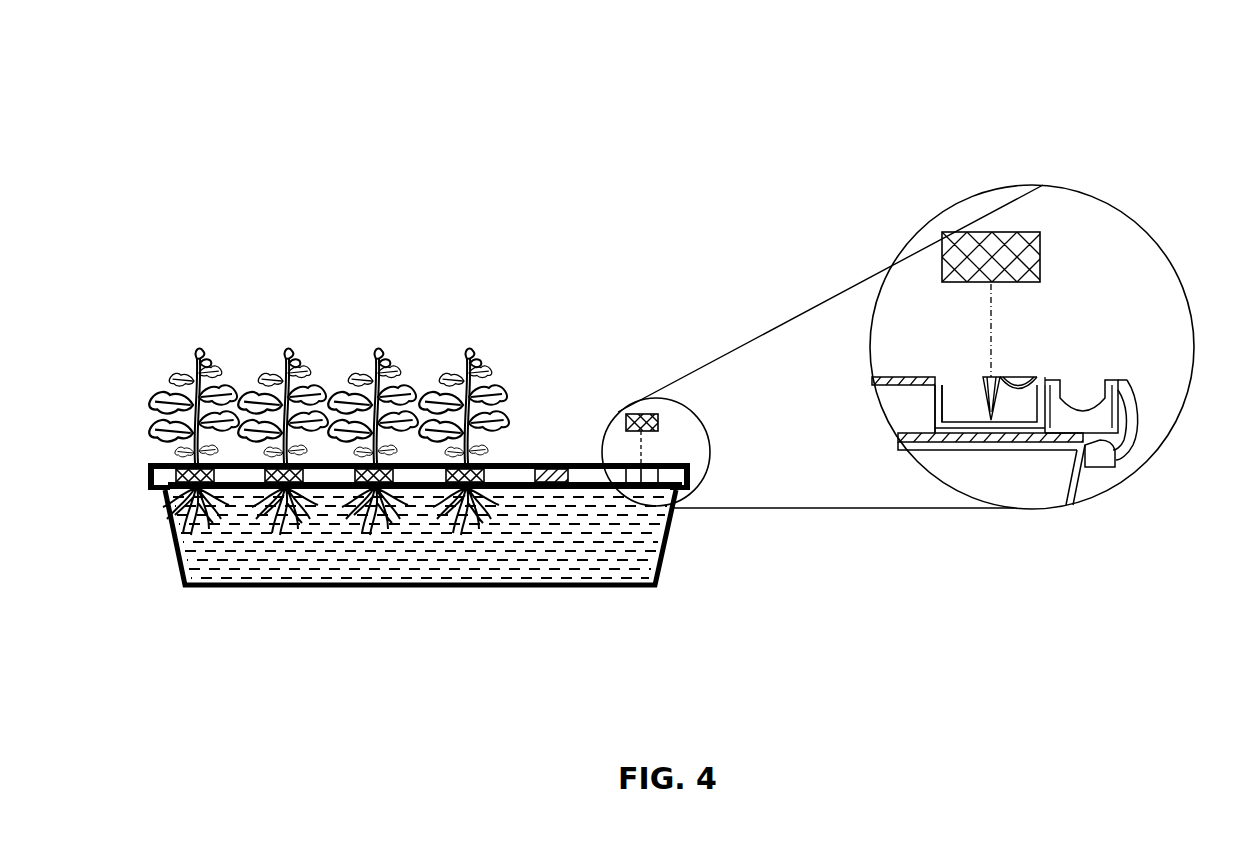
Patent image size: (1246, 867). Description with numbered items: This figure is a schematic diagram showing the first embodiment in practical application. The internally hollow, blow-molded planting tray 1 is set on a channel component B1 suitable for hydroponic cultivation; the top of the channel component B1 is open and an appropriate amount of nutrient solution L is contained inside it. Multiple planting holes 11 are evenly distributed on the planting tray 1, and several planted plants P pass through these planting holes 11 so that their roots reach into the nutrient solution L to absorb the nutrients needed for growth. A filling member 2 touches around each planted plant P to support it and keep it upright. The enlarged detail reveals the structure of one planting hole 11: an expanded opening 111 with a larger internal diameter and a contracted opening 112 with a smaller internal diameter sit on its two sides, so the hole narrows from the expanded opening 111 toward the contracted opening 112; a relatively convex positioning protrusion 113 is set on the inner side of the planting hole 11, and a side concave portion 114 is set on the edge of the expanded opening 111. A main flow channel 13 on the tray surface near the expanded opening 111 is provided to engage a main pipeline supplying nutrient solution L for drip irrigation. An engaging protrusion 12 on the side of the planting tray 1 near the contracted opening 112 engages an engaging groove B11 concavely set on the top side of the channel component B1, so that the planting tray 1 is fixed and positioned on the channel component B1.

The planting tray 1 is at (511, 460).
The planting hole 11 is at (632, 462).
The expanded opening 111 is at (957, 398).
The contracted opening 112 is at (982, 442).
The positioning protrusion 113 is at (993, 392).
The side concave portion 114 is at (1027, 383).
The engaging protrusion 12 is at (1097, 470).
The main flow channel 13 is at (1090, 390).
The filling member 2 is at (658, 415).
The channel component B1 is at (668, 538).
The engaging groove B11 is at (1123, 458).
The nutrient solution L is at (565, 552).
The planted plant P is at (447, 367).